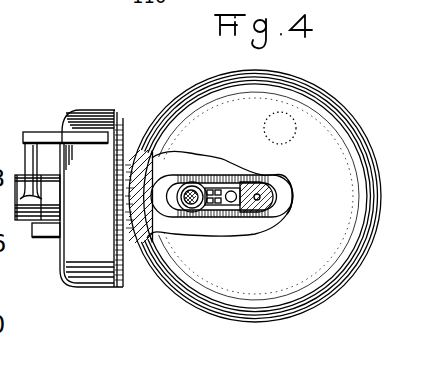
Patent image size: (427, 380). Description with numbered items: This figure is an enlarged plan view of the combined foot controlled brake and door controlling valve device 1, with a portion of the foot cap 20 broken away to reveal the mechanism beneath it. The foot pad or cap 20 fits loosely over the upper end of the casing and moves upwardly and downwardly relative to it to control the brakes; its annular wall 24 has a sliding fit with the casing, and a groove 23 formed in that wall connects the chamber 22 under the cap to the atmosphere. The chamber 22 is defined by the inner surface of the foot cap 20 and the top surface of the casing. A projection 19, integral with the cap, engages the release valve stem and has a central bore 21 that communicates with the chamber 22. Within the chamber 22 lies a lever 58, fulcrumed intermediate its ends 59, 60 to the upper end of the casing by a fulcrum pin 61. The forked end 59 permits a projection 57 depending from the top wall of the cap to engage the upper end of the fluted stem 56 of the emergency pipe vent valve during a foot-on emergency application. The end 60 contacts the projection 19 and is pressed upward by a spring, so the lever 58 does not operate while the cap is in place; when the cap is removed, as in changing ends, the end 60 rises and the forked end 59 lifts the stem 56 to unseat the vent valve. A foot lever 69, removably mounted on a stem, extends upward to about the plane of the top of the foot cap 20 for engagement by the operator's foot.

The combined foot controlled brake and door controlling valve device 1 is at (163, 221).
The projection 19 is at (289, 195).
The foot pad or cap 20 is at (255, 196).
The central bore 21 is at (265, 192).
The chamber 22 is at (268, 222).
The groove 23 is at (144, 197).
The annular wall 24 is at (200, 113).
The fluted stem 56 is at (178, 190).
The projection 57 is at (191, 210).
The lever 58 is at (209, 193).
The forked end 59 is at (185, 212).
The lever end 60 is at (236, 205).
The fulcrum pin 61 is at (280, 128).
The foot lever 69 is at (52, 135).